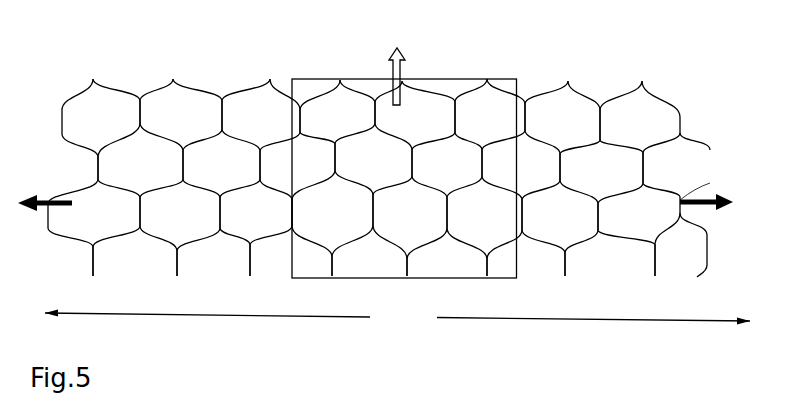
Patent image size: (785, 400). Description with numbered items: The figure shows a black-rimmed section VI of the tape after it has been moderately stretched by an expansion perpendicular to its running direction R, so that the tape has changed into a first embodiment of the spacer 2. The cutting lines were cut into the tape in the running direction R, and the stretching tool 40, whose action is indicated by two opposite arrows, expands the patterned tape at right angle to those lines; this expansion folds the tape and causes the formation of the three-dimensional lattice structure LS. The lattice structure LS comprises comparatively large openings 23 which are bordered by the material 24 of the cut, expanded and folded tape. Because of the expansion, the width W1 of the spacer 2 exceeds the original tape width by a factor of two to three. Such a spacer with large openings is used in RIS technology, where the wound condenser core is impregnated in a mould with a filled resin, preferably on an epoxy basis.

The spacer 2 is at (379, 162).
The openings 23 is at (260, 232).
The material 24 is at (238, 250).
The stretching tool 40 is at (389, 187).
The three-dimensional lattice structure LS is at (160, 157).
The section VI is at (483, 152).
The running direction R is at (397, 67).
The width W1 is at (397, 316).